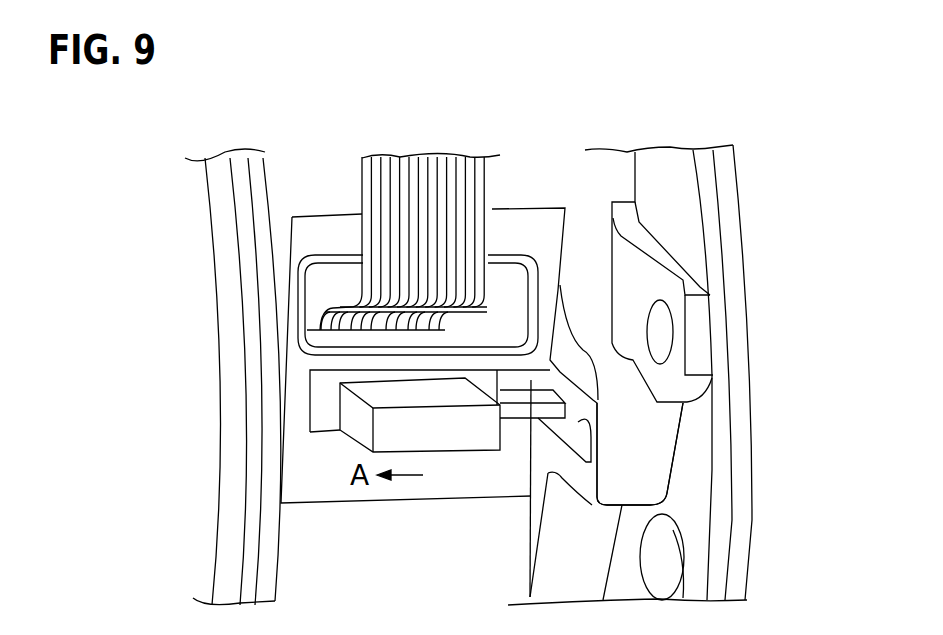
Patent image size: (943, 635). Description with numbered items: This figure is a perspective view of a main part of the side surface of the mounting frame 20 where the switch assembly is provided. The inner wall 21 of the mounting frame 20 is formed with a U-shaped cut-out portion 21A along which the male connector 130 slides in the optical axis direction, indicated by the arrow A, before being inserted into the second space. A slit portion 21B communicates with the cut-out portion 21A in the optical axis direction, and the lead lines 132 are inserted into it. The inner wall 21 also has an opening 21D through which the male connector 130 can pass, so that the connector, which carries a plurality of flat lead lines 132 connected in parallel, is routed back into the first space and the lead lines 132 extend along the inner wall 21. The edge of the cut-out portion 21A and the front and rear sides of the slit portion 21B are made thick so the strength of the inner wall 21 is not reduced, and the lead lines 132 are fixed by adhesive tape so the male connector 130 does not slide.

The mounting frame 20 is at (205, 261).
The inner wall 21 is at (745, 208).
The U-shaped cut-out portion 21A is at (580, 437).
The slit portion 21B is at (520, 383).
The opening 21D is at (322, 270).
The male connector 130 is at (437, 440).
The lead lines 132 is at (497, 185).